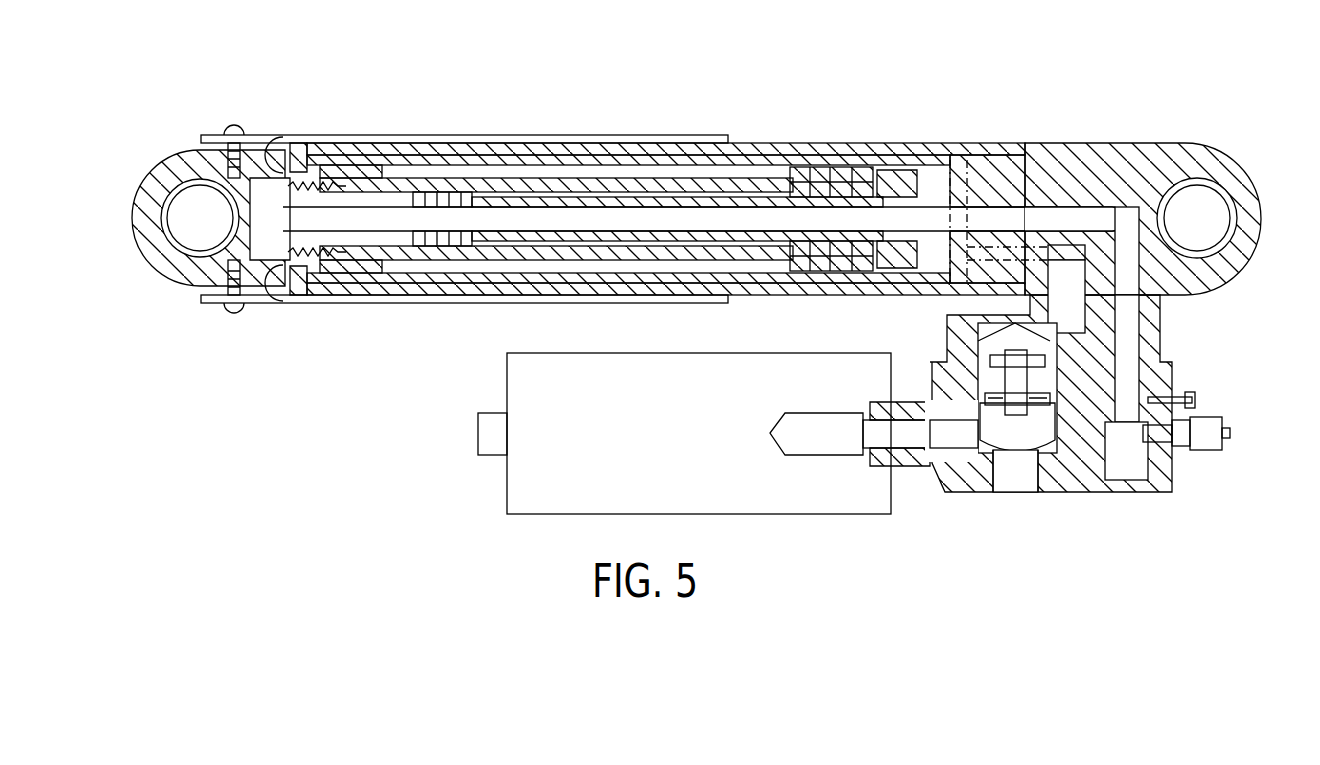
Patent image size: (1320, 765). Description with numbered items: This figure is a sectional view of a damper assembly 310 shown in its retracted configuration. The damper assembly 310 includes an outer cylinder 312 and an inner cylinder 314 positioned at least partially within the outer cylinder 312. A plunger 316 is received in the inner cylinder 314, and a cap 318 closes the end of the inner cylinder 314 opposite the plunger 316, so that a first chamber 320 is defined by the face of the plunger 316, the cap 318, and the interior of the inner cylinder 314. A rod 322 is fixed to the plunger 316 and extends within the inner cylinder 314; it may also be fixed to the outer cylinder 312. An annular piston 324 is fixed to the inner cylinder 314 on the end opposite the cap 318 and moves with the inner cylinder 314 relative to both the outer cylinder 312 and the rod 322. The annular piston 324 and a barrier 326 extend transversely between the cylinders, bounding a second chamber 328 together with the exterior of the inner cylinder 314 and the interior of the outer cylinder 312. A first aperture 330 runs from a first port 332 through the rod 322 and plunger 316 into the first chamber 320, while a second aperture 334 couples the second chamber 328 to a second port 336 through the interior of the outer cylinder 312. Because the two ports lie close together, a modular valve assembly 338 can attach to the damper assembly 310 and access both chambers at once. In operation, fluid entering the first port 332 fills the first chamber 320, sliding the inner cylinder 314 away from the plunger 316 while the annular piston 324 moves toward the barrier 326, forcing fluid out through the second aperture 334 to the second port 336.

The damper assembly 310 is at (1143, 100).
The outer cylinder 312 is at (770, 143).
The inner cylinder 314 is at (514, 180).
The plunger 316 is at (437, 245).
The cap 318 is at (279, 180).
The first chamber 320 is at (368, 240).
The rod 322 is at (590, 200).
The annular piston 324 is at (847, 160).
The barrier 326 is at (344, 162).
The second chamber 328 is at (447, 178).
The first aperture 330 is at (1035, 220).
The first port 332 is at (1133, 292).
The second aperture 334 is at (958, 150).
The second port 336 is at (1068, 292).
The modular valve assembly 338 is at (1172, 480).